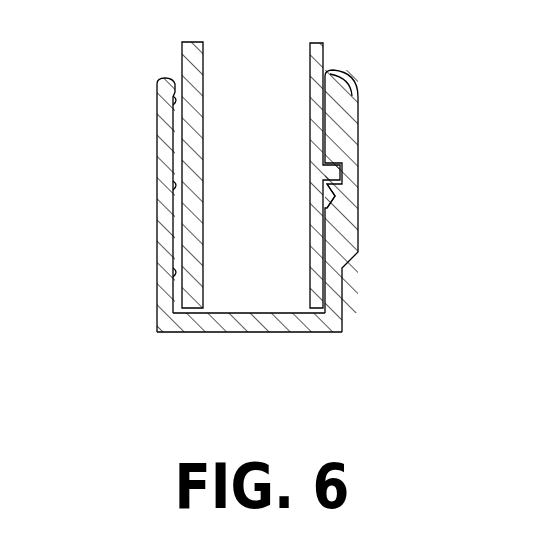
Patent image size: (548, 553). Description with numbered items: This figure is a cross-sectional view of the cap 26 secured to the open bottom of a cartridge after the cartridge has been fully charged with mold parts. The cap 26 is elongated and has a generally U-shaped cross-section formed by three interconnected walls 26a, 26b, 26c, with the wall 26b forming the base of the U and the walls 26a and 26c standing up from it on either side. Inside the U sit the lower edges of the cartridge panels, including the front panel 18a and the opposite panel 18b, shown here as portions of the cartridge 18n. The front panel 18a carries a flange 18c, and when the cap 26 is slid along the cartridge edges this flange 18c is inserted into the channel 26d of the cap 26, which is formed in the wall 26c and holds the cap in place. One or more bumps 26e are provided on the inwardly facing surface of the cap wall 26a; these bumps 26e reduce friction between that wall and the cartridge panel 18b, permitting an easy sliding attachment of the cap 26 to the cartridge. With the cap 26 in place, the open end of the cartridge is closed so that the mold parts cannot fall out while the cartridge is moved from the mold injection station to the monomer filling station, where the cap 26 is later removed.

The frame member 18n is at (256, 90).
The front panel 18a is at (326, 64).
The second side wall of frame member 18b is at (203, 145).
The flange 18c is at (341, 171).
The cap 26 is at (259, 230).
The cap wall 26a is at (162, 168).
The cap wall 26b is at (258, 333).
The cap wall 26c is at (358, 236).
The channel 26d is at (336, 211).
The bumps 26e is at (172, 99).